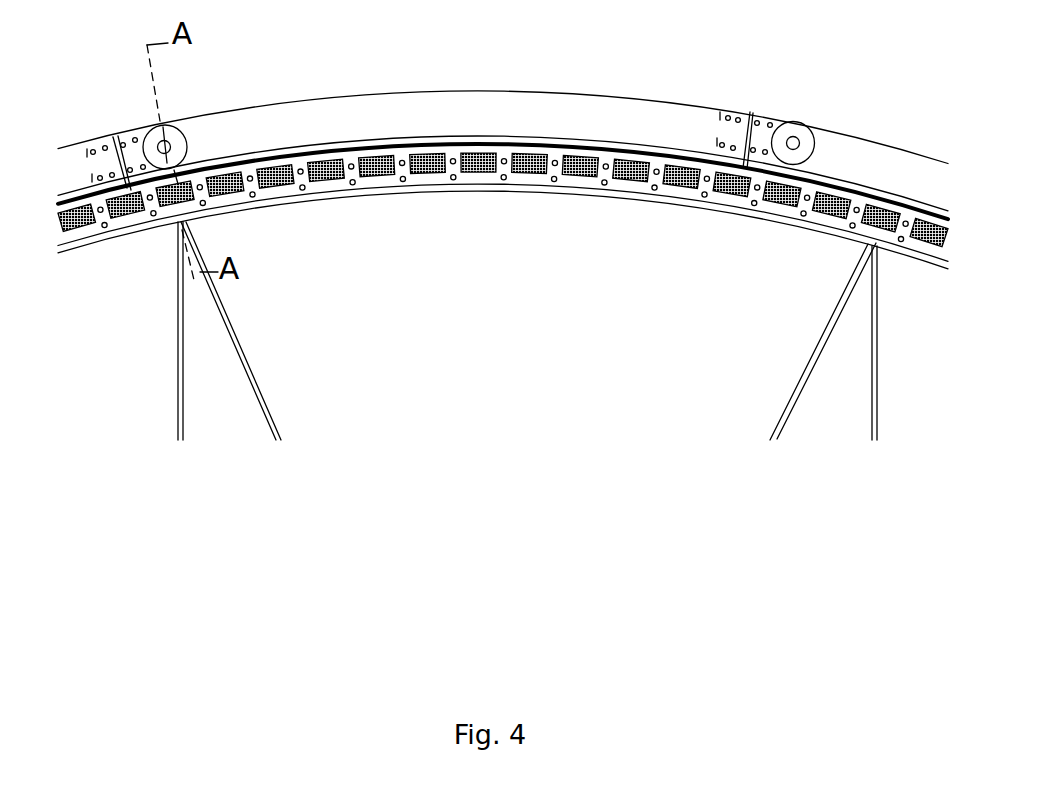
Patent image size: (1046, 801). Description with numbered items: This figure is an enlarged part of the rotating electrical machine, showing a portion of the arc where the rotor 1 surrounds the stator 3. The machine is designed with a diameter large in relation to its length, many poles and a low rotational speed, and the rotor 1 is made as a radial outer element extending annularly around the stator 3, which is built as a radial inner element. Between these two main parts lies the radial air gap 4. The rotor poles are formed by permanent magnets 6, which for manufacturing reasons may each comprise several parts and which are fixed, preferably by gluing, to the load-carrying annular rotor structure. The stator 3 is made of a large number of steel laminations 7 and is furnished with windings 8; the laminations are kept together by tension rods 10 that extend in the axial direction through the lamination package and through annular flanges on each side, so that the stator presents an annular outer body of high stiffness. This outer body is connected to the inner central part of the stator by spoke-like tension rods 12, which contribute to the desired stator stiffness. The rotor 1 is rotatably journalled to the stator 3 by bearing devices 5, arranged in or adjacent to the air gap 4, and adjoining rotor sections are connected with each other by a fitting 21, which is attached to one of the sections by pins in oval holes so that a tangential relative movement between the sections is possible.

The rotor 1 is at (503, 133).
The stator 3 is at (503, 226).
The radial air gap 4 is at (311, 158).
The bearing device 5 is at (793, 118).
The permanent magnets 6 is at (357, 149).
The steel laminations 7 is at (432, 176).
The windings 8 is at (378, 174).
The tension rods 10 is at (451, 182).
The spoke-like tension rods 12 is at (527, 331).
The fitting 21 is at (732, 115).